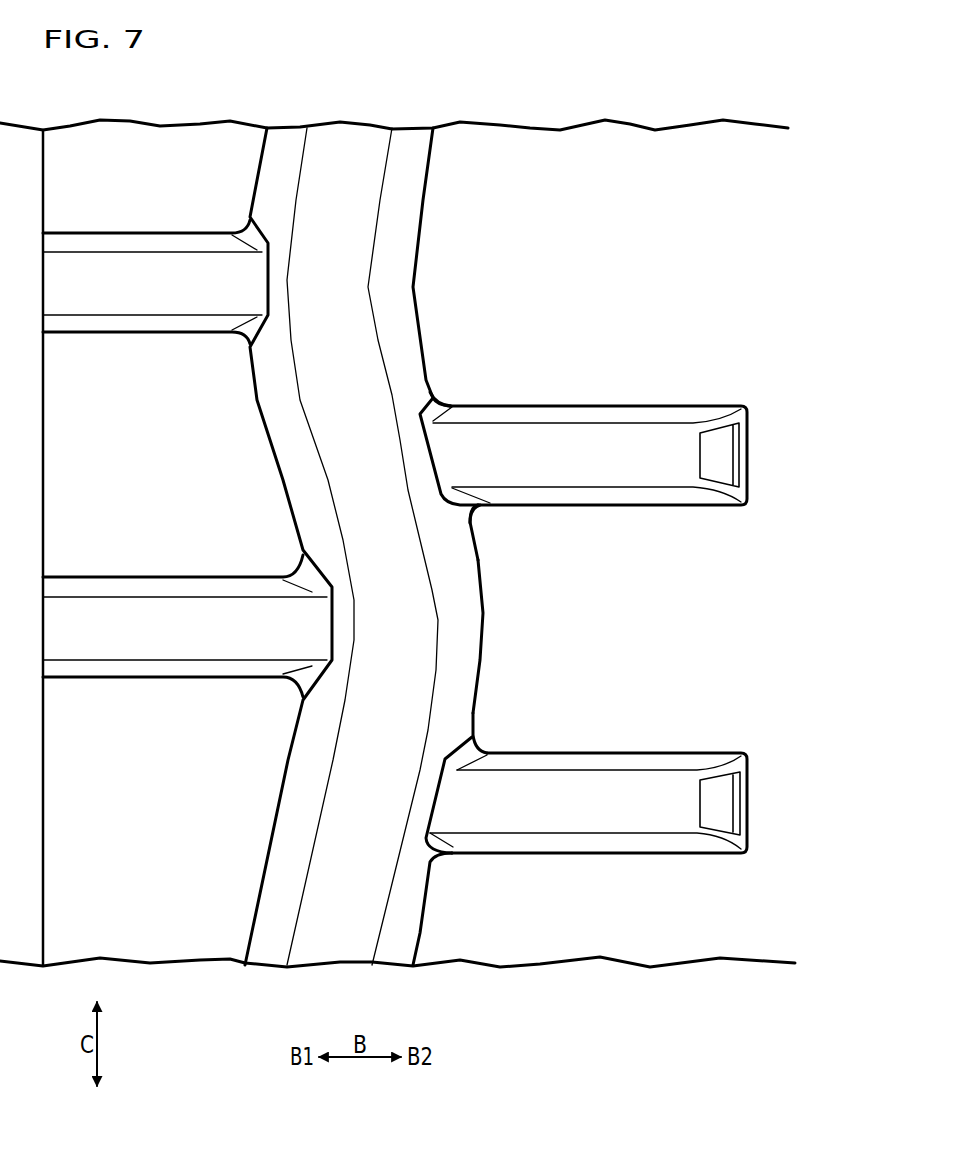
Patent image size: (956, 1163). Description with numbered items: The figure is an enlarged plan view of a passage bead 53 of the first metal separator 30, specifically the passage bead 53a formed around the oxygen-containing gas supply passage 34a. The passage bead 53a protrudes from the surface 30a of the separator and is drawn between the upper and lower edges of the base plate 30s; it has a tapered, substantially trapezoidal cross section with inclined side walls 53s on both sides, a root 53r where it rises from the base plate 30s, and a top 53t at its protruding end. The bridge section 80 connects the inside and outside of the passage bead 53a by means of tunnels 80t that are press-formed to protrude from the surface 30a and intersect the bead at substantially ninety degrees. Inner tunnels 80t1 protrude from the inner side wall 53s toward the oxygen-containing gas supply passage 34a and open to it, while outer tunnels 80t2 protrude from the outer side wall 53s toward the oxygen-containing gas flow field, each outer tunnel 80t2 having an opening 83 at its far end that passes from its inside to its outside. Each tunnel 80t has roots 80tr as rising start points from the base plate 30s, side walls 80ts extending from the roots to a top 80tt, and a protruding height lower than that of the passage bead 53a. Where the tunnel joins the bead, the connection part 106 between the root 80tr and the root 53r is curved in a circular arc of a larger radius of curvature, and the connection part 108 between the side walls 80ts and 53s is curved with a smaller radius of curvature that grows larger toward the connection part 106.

The first metal separator 30 is at (686, 71).
The surface of the first metal separator 30a is at (588, 148).
The base plate 30s is at (582, 945).
The oxygen-containing gas supply passage 34a is at (25, 510).
The passage bead 53 is at (412, 197).
The passage bead around oxygen-containing gas supply passage 53a is at (450, 546).
The side wall of passage bead 53s is at (283, 423).
The root of passage bead 53r is at (483, 628).
The top of passage bead 53t is at (417, 643).
The bridge section 80 is at (706, 396).
The tunnel 80t is at (418, 573).
The inner tunnel 80t1 is at (152, 322).
The outer tunnel 80t2 is at (561, 618).
The top of tunnel 80tt is at (583, 442).
The root of tunnel 80tr is at (617, 403).
The side wall of tunnel 80ts is at (677, 497).
The opening 83 is at (723, 454).
The connection part between roots 106 is at (440, 400).
The connection part between side walls 108 is at (423, 417).